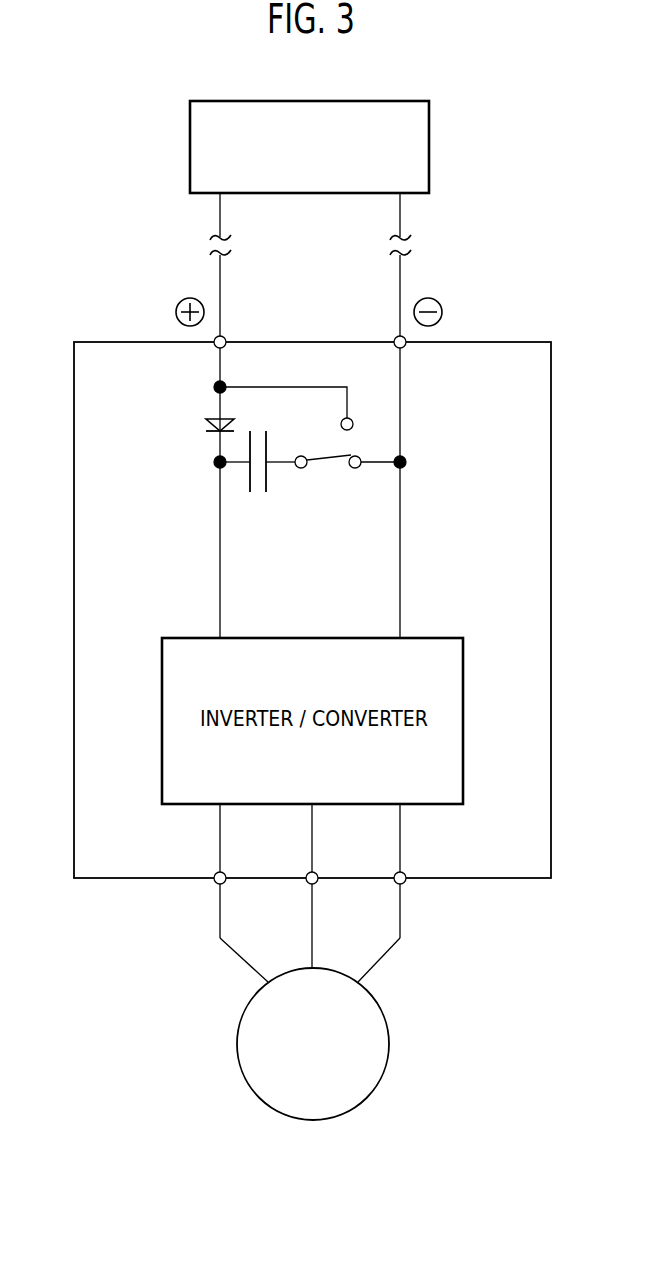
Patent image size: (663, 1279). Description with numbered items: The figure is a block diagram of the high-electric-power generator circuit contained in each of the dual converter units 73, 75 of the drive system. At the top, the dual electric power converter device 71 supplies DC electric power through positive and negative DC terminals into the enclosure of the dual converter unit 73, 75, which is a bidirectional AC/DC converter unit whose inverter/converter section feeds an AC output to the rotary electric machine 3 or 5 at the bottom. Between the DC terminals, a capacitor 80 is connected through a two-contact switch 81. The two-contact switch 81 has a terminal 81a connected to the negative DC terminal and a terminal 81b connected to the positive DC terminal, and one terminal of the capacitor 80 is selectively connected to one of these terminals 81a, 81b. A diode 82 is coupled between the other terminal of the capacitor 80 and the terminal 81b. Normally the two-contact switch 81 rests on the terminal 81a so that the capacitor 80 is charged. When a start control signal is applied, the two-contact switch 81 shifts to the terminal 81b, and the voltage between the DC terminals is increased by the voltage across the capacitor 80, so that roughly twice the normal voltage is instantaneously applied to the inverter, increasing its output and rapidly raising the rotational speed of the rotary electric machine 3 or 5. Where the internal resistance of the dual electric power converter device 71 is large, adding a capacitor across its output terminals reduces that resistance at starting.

The dual electric power converter device 71 is at (413, 130).
The dual converter unit 73 is at (312, 588).
The dual converter unit 75 is at (448, 352).
The capacitor 80 is at (259, 478).
The two-contact switch 81 is at (341, 455).
The terminal 81a is at (361, 465).
The terminal 81b is at (353, 421).
The diode 82 is at (207, 431).
The rotary electric machine 3 is at (334, 1002).
The rotary electric machine 5 is at (350, 1030).